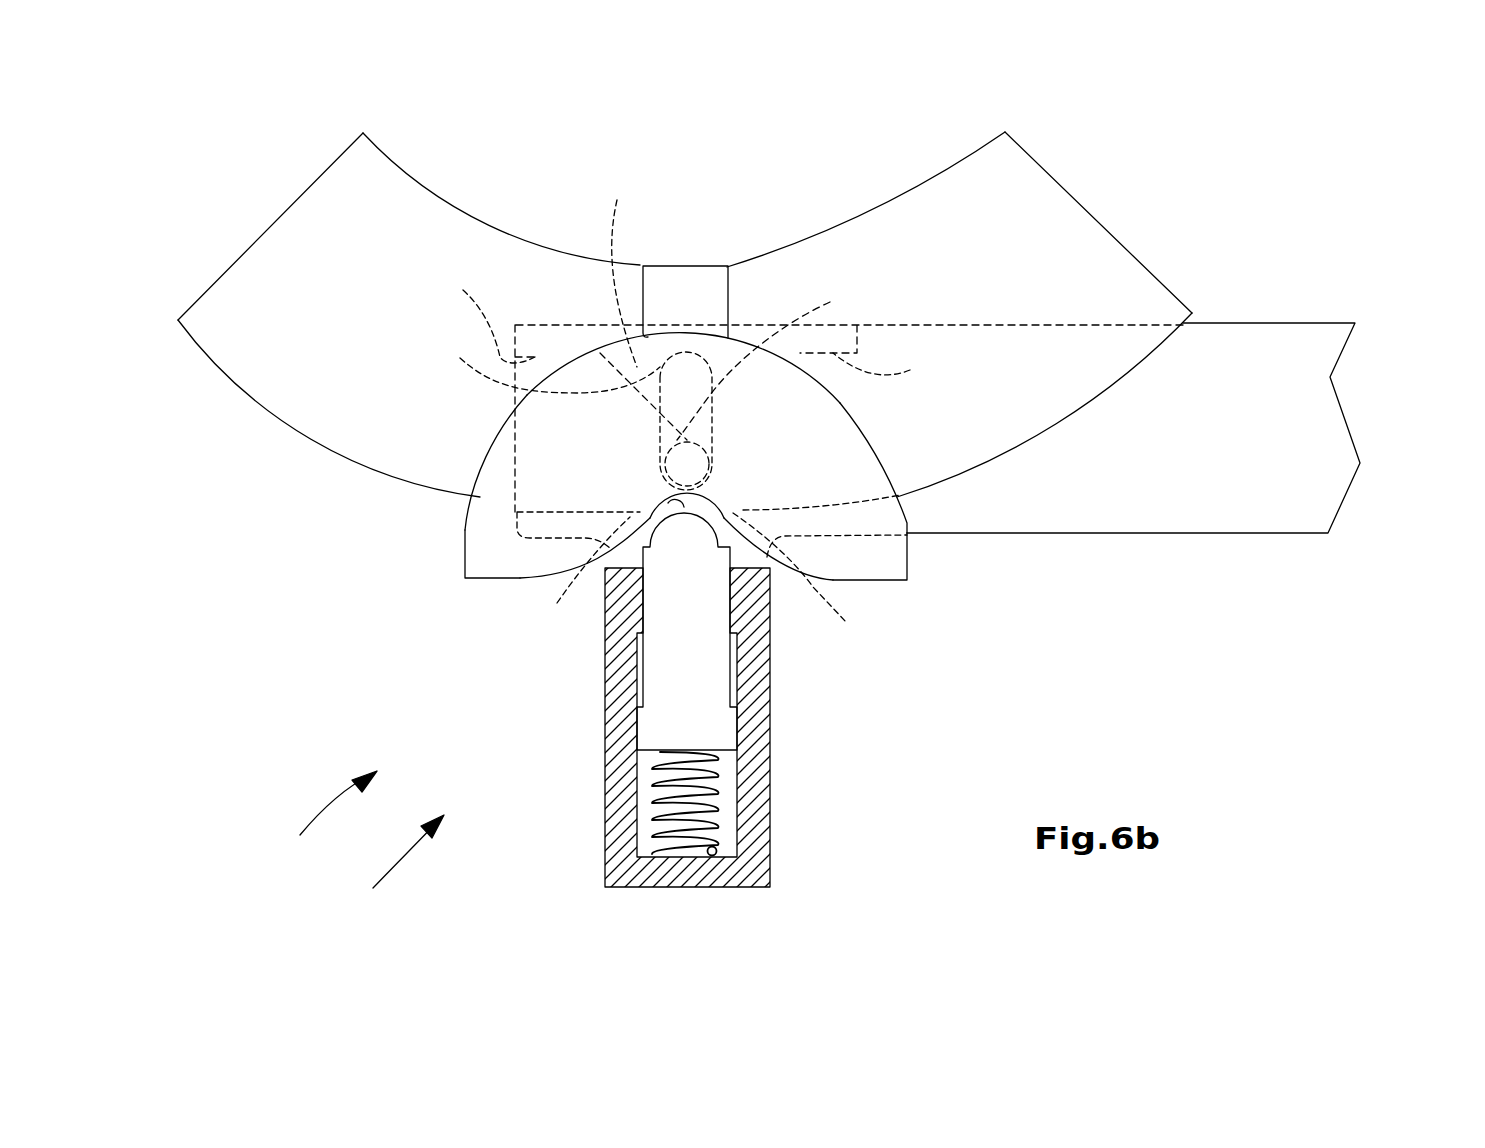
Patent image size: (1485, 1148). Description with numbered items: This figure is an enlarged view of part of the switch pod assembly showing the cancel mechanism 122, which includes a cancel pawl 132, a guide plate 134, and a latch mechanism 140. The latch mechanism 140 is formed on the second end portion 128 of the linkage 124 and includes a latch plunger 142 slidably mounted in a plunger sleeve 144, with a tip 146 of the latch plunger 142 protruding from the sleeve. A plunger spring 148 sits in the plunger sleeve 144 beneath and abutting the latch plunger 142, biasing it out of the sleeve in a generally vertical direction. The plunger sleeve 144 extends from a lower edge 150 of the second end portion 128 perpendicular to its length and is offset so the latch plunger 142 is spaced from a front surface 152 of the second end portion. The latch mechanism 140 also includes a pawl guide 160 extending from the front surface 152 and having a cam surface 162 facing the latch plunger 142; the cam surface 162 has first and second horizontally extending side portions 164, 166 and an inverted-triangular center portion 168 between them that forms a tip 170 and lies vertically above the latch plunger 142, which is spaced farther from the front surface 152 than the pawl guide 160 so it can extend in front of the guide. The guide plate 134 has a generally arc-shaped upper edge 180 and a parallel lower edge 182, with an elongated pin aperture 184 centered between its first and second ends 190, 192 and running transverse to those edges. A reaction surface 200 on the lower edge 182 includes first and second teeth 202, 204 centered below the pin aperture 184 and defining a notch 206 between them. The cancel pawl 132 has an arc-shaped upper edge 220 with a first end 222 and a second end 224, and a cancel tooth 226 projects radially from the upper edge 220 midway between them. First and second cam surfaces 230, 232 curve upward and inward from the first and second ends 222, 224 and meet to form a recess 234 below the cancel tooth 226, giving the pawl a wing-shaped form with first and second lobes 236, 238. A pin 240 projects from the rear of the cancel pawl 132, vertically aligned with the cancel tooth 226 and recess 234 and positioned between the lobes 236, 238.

The cancel mechanism 122 is at (312, 814).
The linkage 124 is at (1313, 488).
The second end portion 128 is at (1253, 488).
The cancel pawl 132 is at (490, 483).
The guide plate 134 is at (393, 213).
The latch mechanism 140 is at (383, 860).
The latch plunger 142 is at (707, 670).
The plunger sleeve 144 is at (757, 807).
The tip 146 is at (685, 522).
The plunger spring 148 is at (697, 817).
The lower edge 150 is at (1143, 533).
The front surface 152 is at (1178, 482).
The pawl guide 160 is at (618, 267).
The cam surface 162 is at (534, 365).
The first side portion 164 is at (895, 370).
The second side portion 166 is at (474, 314).
The center portion 168 is at (717, 423).
The tip 170 is at (667, 437).
The upper edge 180 is at (896, 190).
The lower edge 182 is at (983, 462).
The pin aperture 184 is at (769, 353).
The first end 190 is at (1073, 197).
The second end 192 is at (297, 200).
The reaction surface 200 is at (640, 565).
The first tooth 202 is at (817, 581).
The second tooth 204 is at (585, 575).
The notch 206 is at (730, 547).
The upper edge 220 is at (747, 342).
The first end 222 is at (909, 562).
The second end 224 is at (462, 558).
The cancel tooth 226 is at (687, 287).
The first cam surface 230 is at (834, 581).
The second cam surface 232 is at (487, 580).
The recess 234 is at (670, 505).
The first lobe 236 is at (843, 473).
The second lobe 238 is at (530, 447).
The pin 240 is at (710, 468).